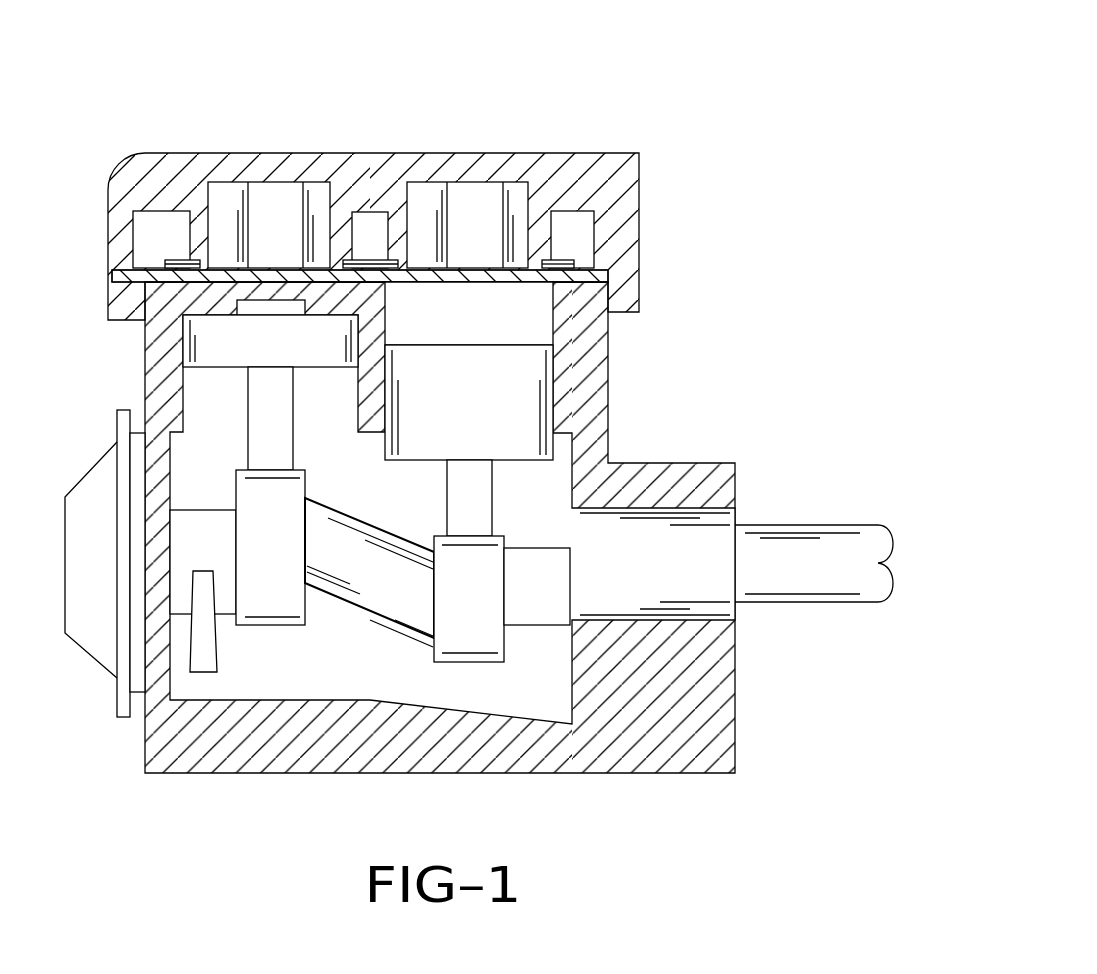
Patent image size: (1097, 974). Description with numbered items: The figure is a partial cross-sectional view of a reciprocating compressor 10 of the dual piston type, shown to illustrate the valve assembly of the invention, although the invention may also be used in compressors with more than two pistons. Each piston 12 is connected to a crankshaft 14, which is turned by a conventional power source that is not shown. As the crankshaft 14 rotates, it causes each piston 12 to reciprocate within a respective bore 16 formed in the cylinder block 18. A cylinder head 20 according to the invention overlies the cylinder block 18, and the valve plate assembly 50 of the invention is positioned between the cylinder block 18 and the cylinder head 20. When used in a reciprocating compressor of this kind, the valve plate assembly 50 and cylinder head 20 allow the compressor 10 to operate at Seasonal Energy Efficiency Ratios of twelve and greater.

The reciprocating compressor 10 is at (697, 122).
The piston 12 is at (217, 343).
The crankshaft 14 is at (775, 580).
The bore 16 is at (184, 390).
The cylinder block 18 is at (143, 300).
The cylinder head 20 is at (163, 152).
The valve plate assembly 50 is at (612, 286).